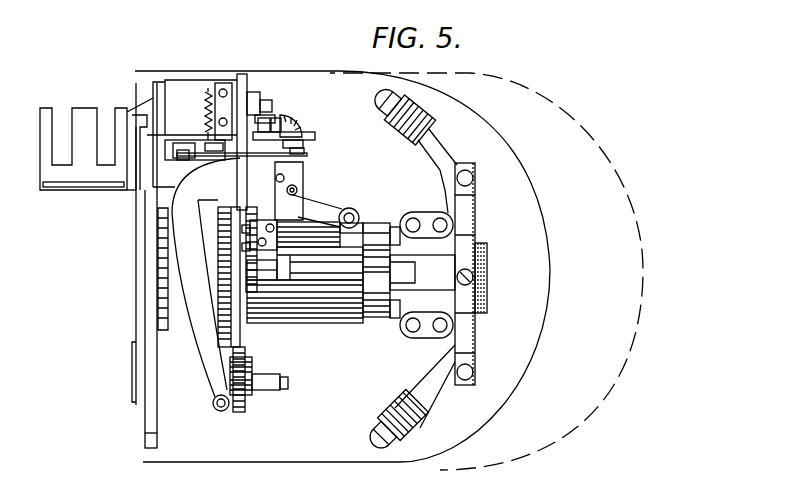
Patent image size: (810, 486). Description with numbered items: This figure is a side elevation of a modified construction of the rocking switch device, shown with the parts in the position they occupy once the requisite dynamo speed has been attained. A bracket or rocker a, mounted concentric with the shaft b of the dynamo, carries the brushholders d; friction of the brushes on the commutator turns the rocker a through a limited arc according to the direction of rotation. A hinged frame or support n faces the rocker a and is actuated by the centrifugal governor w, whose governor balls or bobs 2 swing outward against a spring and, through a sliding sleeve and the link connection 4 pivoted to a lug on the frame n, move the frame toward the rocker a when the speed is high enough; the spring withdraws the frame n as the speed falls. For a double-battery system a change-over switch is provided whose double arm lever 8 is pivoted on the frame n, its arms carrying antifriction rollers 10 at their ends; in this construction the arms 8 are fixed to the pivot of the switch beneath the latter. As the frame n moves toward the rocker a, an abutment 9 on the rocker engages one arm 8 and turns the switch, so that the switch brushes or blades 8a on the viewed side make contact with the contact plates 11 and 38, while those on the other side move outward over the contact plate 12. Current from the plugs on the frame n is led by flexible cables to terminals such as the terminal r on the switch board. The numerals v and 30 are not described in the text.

The brushholder d is at (86, 118).
The bracket or rocker a is at (135, 190).
The antifriction roller 10 is at (180, 138).
The abutment 9 is at (242, 78).
The switch brushes or blades 8a is at (278, 120).
The double arm lever 8 is at (229, 158).
The contact plate 12 is at (298, 141).
The contact plate 38 is at (305, 145).
The contact plate 11 is at (293, 153).
The link connection 4 is at (334, 210).
The frame or support n is at (206, 284).
The gear wheel v is at (248, 338).
The terminal r is at (262, 394).
The spindle drum 30 is at (312, 318).
The shaft b is at (484, 272).
The centrifugal governor w is at (442, 147).
The governor balls or bobs 2 is at (399, 128).